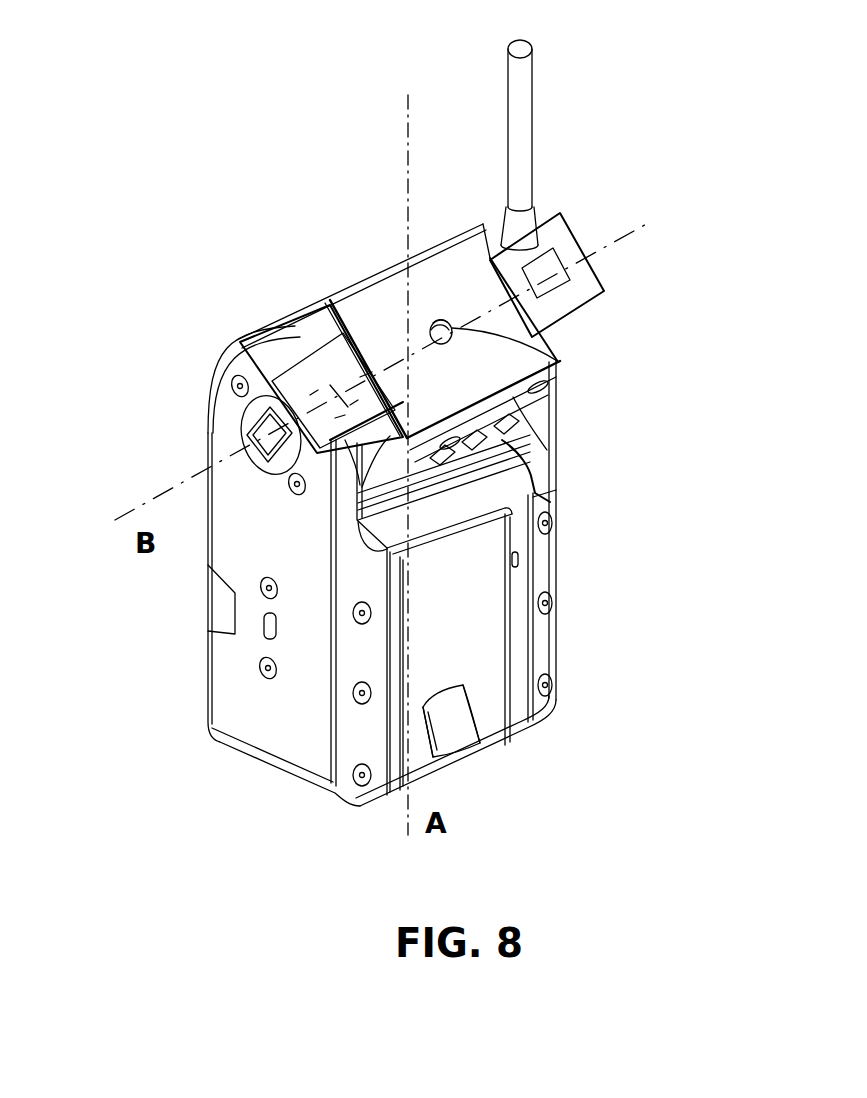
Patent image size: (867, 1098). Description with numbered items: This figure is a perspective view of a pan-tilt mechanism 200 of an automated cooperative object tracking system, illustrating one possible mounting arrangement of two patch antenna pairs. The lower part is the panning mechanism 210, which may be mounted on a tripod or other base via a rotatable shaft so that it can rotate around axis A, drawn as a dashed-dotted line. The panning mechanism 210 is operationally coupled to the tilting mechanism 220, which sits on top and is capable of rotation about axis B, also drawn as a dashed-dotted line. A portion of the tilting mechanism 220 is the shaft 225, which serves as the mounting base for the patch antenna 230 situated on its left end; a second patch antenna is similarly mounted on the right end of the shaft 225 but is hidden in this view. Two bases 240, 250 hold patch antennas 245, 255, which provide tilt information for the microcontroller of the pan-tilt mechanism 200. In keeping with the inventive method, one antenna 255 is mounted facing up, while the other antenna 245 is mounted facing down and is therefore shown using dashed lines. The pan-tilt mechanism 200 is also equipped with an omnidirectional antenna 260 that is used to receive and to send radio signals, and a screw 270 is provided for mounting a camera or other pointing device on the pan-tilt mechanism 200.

The pan-tilt mechanism 200 is at (561, 819).
The panning mechanism 210 is at (540, 560).
The tilting mechanism 220 is at (376, 300).
The shaft 225 is at (246, 416).
The patch antenna 230 is at (248, 437).
The base 240 is at (283, 381).
The patch antenna 245 is at (308, 365).
The base 250 is at (577, 288).
The patch antenna 255 is at (565, 262).
The omnidirectional antenna 260 is at (514, 97).
The screw 270 is at (562, 364).